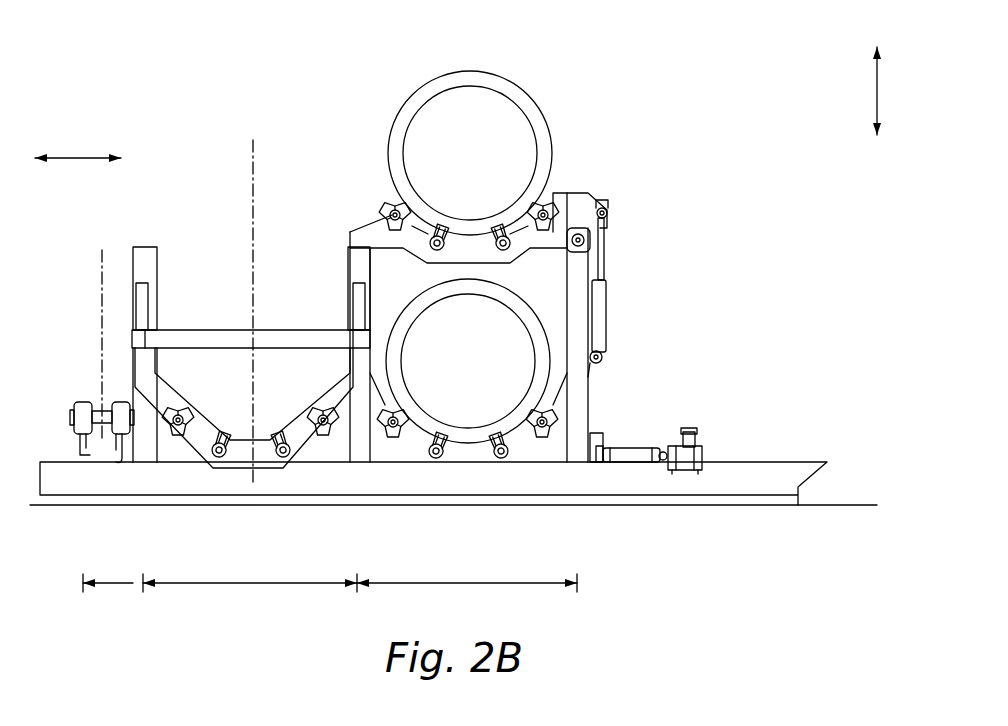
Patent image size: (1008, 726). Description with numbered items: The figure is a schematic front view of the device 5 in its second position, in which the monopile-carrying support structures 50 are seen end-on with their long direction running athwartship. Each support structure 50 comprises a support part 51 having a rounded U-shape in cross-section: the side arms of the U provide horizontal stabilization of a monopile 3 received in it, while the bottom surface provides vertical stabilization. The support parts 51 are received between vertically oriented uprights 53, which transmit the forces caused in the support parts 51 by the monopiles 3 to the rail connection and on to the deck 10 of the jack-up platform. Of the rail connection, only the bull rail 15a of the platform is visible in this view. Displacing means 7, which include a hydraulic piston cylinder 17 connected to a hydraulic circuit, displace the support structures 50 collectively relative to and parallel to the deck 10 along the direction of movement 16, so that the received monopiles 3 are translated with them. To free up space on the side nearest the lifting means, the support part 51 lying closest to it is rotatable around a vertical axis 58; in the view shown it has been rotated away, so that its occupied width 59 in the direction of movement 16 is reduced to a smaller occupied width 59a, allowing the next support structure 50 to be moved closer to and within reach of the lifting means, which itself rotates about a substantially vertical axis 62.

The support structure 50 is at (350, 48).
The support part 51 is at (372, 232).
The upright 53 is at (362, 270).
The monopile 3 is at (556, 148).
The displacing means 7 is at (692, 403).
The hydraulic piston cylinder 17 is at (638, 452).
The deck 10 is at (858, 505).
The bull rail 15a is at (770, 480).
The device 5 is at (662, 113).
The vertical axis 62 is at (877, 88).
The direction of movement 16 is at (78, 157).
The vertical axis 58 is at (102, 258).
The occupied width 59 is at (250, 586).
The smaller occupied width 59a is at (112, 586).